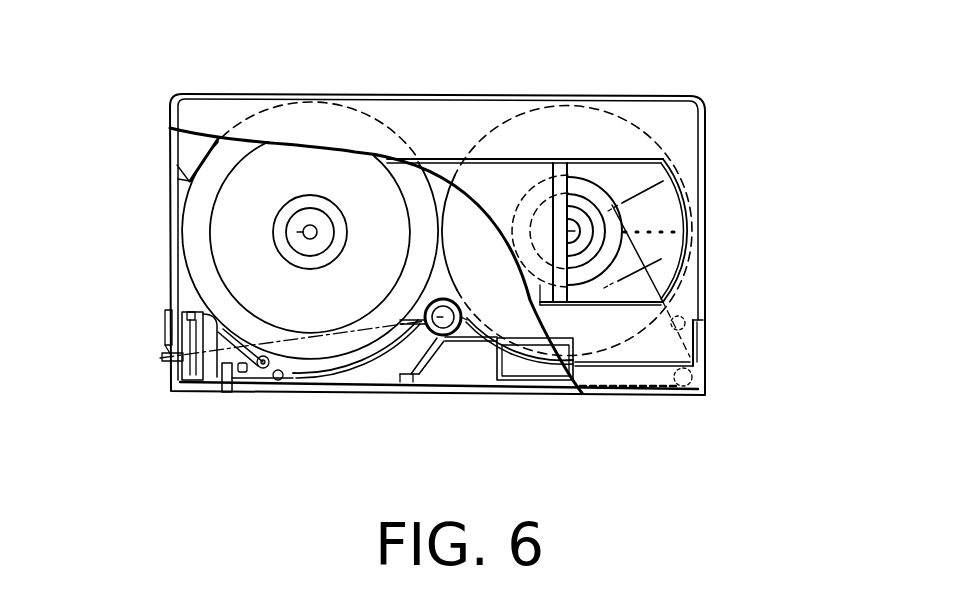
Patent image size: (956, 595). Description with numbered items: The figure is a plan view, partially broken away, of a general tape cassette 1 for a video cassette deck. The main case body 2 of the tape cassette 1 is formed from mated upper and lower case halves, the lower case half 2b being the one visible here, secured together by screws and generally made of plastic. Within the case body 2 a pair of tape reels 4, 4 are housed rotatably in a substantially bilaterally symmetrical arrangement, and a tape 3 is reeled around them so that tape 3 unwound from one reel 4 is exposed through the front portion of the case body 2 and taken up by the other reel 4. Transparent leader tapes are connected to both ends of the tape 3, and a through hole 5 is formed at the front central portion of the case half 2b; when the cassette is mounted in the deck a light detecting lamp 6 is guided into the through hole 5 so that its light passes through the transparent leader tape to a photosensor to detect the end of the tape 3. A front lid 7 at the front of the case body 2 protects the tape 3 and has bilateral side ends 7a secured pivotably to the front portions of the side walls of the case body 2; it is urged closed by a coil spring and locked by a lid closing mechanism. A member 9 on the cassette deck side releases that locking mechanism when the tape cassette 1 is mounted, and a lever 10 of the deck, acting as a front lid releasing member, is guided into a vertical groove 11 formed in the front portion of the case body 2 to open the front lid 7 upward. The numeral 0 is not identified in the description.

The tape cassette 1 is at (737, 137).
The main case body 2 is at (355, 97).
The lower case half 2b is at (168, 163).
The tape 3 is at (332, 387).
The tape reel 4 is at (266, 107).
The through hole 5 is at (407, 380).
The light detecting lamp 6 is at (446, 336).
The front lid 7 is at (618, 390).
The side end of front lid 7a is at (703, 338).
The member for operating front lid locking mechanism 9 is at (167, 312).
The lever 0 is at (160, 358).
The lever 10 is at (225, 388).
The vertical groove 11 is at (232, 392).